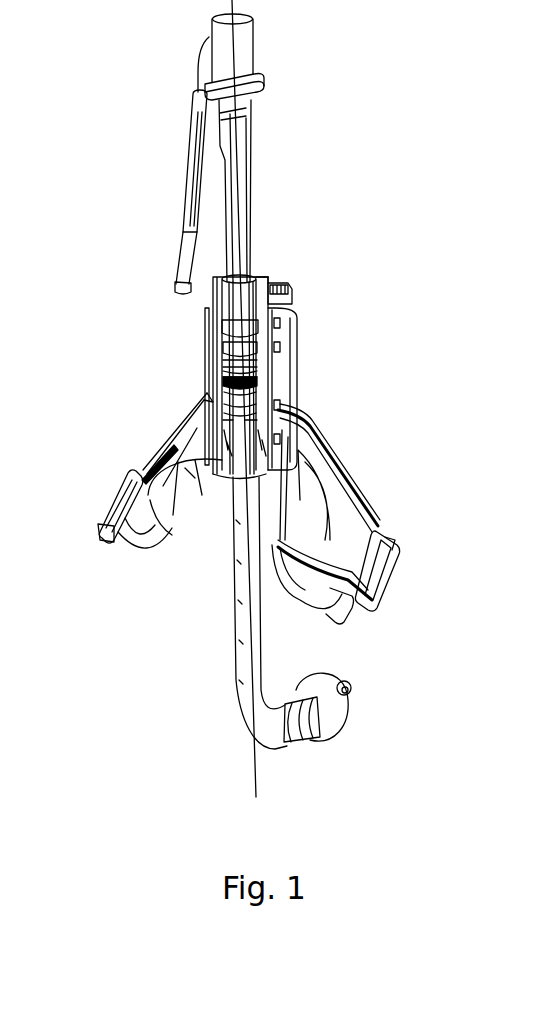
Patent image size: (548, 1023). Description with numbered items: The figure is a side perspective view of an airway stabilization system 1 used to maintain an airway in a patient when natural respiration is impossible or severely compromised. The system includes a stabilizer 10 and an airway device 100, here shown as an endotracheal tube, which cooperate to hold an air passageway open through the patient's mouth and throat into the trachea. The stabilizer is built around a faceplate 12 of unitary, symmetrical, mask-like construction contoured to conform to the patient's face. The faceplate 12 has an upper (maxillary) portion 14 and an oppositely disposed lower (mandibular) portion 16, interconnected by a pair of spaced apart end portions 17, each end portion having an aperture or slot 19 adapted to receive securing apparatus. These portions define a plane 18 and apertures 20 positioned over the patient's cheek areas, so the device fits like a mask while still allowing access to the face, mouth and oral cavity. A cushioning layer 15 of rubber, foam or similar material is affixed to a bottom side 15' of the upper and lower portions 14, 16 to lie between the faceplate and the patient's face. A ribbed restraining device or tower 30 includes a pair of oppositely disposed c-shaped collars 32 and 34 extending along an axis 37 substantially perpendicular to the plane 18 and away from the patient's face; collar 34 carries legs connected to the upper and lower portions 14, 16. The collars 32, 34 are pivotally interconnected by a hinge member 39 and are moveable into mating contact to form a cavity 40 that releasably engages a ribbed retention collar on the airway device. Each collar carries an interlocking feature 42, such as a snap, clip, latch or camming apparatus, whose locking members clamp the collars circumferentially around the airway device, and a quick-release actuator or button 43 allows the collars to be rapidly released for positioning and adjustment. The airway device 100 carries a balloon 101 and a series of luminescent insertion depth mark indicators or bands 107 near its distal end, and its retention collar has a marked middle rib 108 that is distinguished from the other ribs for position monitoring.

The airway stabilization system 1 is at (383, 390).
The stabilizer 10 is at (329, 437).
The faceplate 12 is at (190, 442).
The upper (maxillary) portion 14 is at (143, 553).
The cushioning layer 15 is at (245, 552).
The bottom side 15' is at (178, 561).
The lower (mandibular) portion 16 is at (356, 508).
The end portions 17 is at (108, 522).
The plane 18 is at (222, 540).
The aperture or slot 19 is at (126, 480).
The apertures 20 is at (148, 470).
The ribbed restraining device or tower 30 is at (238, 366).
The c-shaped collar 32 is at (236, 296).
The c-shaped collar 34 is at (262, 277).
The axis 37 is at (241, 213).
The hinge member 39 is at (210, 330).
The cavity 40 is at (260, 271).
The interlocking feature 42 is at (286, 330).
The quick-release actuator or button 43 is at (280, 285).
The airway device 100 is at (281, 228).
The balloon 101 is at (336, 712).
The insertion depth mark indicators or bands 107 is at (304, 757).
The middle rib 108 is at (256, 380).